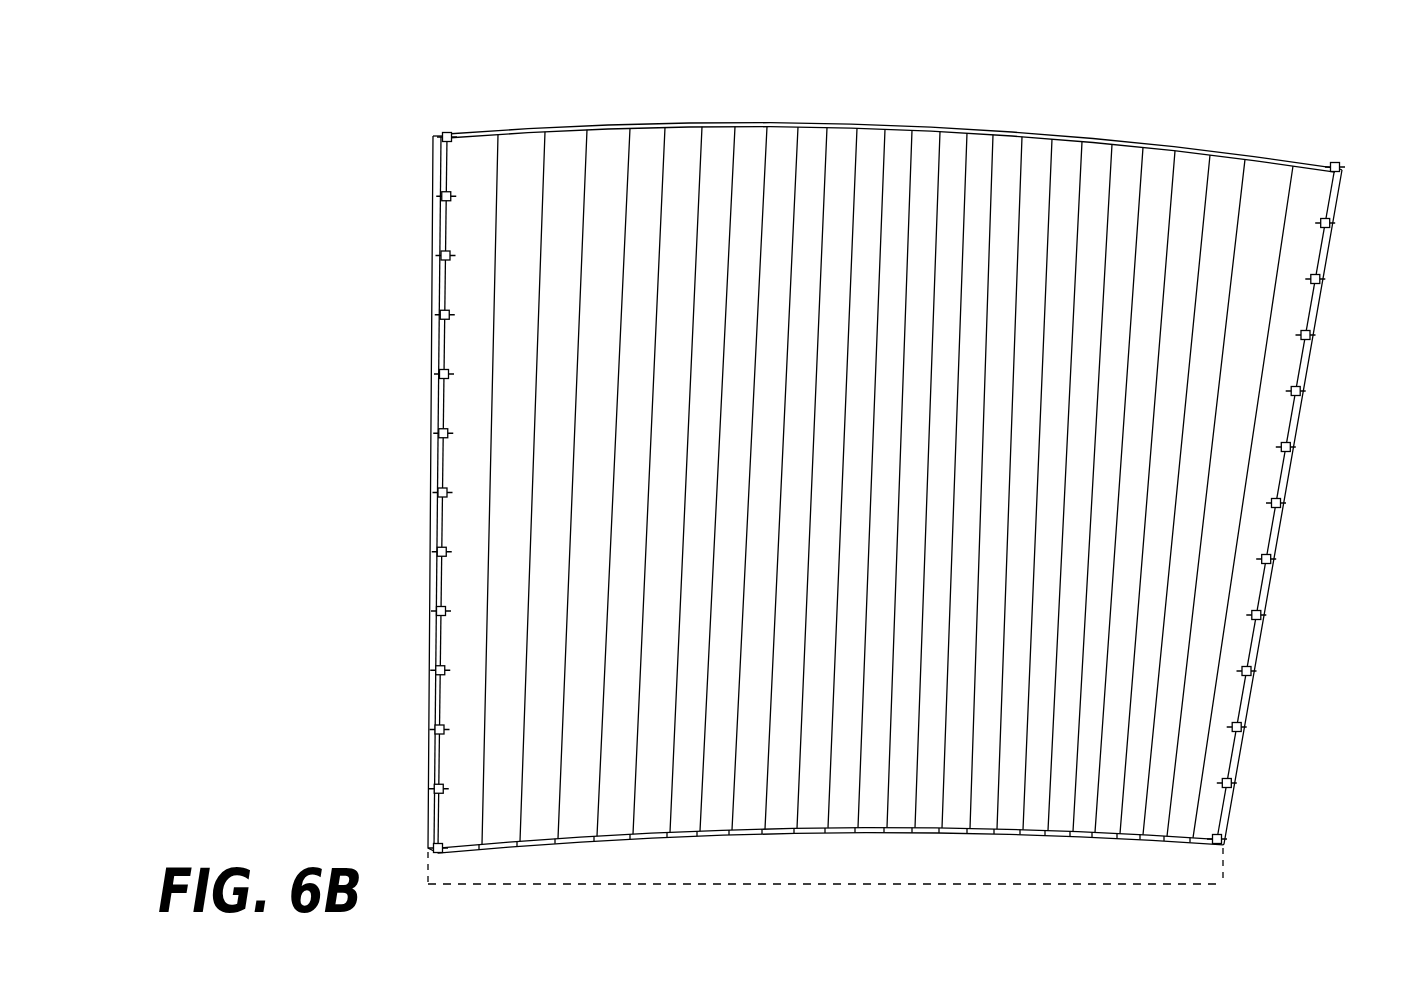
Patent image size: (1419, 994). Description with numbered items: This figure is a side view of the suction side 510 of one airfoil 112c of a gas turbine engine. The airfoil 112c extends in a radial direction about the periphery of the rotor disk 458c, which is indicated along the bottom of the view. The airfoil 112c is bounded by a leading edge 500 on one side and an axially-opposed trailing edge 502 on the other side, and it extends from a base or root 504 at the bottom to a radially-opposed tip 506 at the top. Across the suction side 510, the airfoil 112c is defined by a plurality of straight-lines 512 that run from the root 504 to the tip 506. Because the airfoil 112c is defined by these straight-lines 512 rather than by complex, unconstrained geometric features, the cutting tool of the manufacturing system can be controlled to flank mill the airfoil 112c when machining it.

The airfoil 112c is at (958, 106).
The leading edge 500 is at (430, 767).
The trailing edge 502 is at (1252, 683).
The root 504 is at (800, 834).
The tip 506 is at (1162, 145).
The suction side 510 is at (1228, 442).
The plurality of straight-lines 512 is at (591, 134).
The rotor disk 458c is at (443, 886).